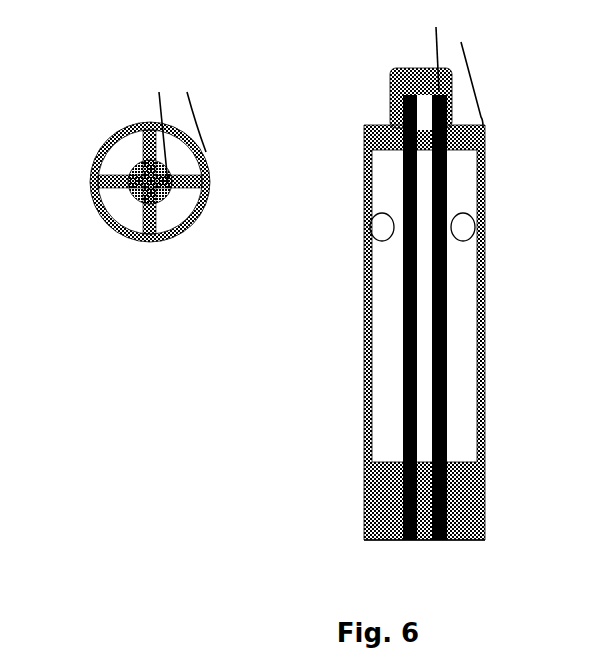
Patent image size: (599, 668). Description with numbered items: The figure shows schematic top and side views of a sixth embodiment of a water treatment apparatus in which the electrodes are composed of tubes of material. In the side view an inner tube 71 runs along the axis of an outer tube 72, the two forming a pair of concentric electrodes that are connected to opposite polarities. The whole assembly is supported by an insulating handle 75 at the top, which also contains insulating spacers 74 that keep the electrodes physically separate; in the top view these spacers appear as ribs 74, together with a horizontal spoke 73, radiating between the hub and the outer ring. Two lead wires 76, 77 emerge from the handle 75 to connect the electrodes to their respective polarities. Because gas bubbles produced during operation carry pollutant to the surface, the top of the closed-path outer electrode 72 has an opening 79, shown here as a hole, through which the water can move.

The inner tube 71 is at (113, 186).
The outer tube 72 is at (105, 141).
The horizontal spoke 73 is at (210, 182).
The insulating spacers 74 is at (141, 157).
The insulating handle 75 is at (130, 201).
The lead wire 76 is at (158, 92).
The lead wire 77 is at (193, 93).
The opening 79 is at (371, 229).